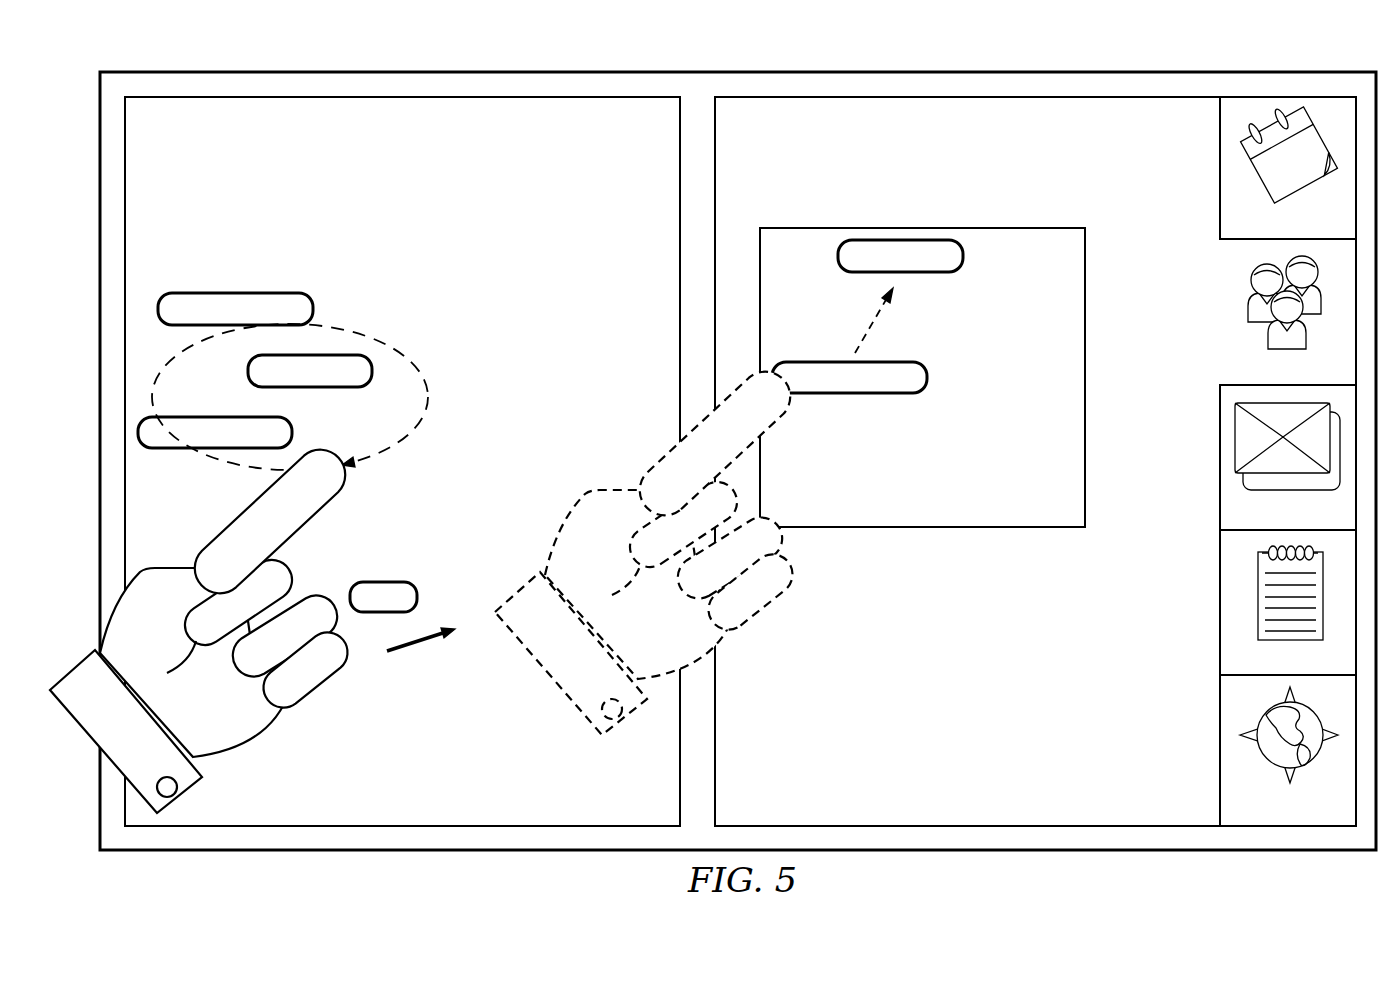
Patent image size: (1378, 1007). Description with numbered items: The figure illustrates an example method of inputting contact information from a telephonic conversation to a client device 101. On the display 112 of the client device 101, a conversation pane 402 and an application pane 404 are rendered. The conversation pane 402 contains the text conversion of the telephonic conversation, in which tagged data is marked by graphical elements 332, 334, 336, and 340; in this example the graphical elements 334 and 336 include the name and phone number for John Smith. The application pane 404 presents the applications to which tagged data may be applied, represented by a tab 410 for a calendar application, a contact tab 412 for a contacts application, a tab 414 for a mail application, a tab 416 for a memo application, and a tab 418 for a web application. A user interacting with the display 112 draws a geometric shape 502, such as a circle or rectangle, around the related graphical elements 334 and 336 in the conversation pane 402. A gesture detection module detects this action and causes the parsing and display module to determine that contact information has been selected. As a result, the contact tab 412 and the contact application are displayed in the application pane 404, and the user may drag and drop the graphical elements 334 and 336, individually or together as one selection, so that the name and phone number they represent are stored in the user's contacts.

The client device 101 is at (423, 71).
The display 112 is at (313, 85).
The conversation pane 402 is at (218, 112).
The application pane 404 is at (1150, 105).
The tab 410 is at (1228, 187).
The contact tab 412 is at (1228, 326).
The tab 414 is at (1230, 479).
The tab 416 is at (1231, 598).
The tab 418 is at (1231, 745).
The graphical element 332 is at (314, 310).
The graphical element 334 is at (372, 384).
The graphical element 336 is at (293, 433).
The graphical element 340 is at (410, 581).
The geometric shape 502 is at (400, 438).